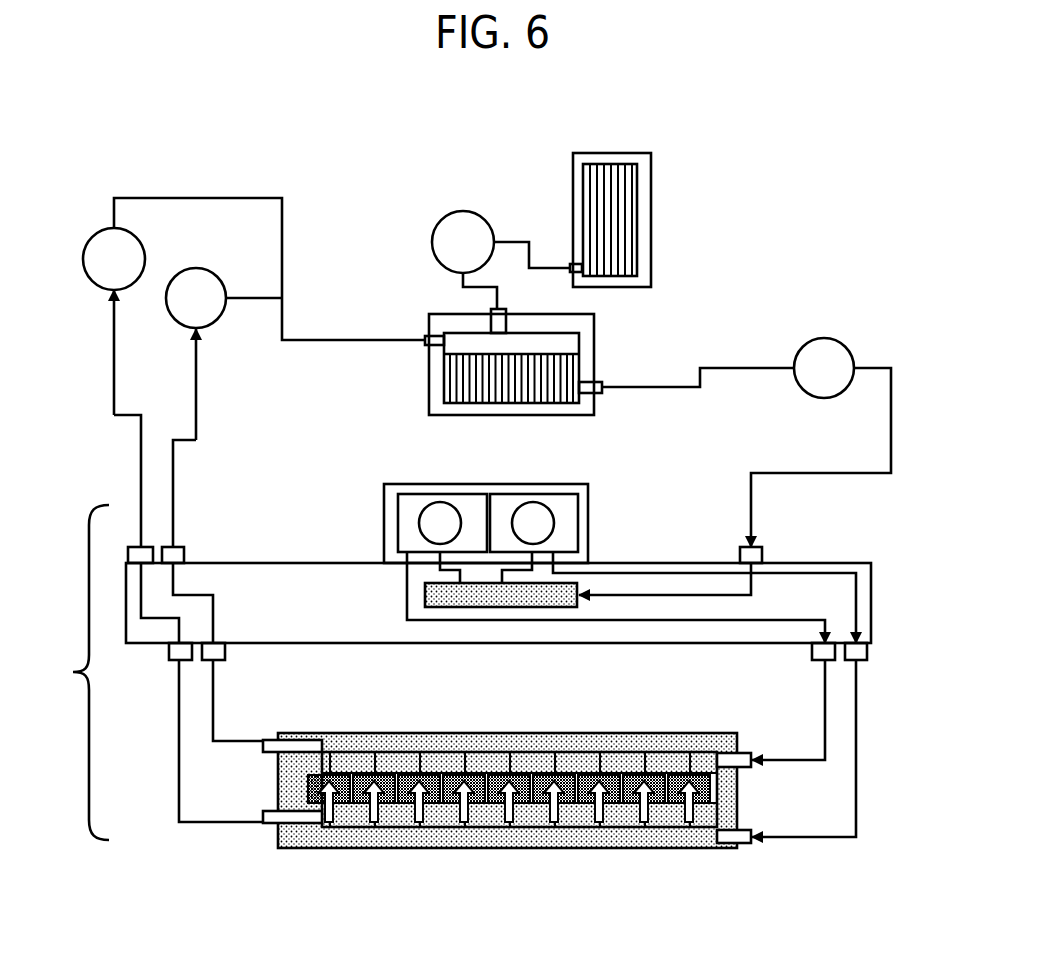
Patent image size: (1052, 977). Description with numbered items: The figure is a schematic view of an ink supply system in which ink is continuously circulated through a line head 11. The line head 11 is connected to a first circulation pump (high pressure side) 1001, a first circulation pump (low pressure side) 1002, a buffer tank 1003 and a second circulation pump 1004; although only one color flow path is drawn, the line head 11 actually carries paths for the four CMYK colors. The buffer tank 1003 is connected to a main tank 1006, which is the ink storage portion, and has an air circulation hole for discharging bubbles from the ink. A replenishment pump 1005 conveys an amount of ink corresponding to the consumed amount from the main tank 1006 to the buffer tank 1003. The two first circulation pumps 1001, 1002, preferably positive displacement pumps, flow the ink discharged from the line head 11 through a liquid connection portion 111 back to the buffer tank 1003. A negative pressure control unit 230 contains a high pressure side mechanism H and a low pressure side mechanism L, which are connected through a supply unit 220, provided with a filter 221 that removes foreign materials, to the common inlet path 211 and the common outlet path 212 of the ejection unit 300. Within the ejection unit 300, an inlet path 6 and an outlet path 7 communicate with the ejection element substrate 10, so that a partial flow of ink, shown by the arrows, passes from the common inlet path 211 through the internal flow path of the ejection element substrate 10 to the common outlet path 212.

The first circulation pump (high pressure side) 1001 is at (114, 228).
The first circulation pump (low pressure side) 1002 is at (222, 250).
The buffer tank 1003 is at (516, 415).
The second circulation pump 1004 is at (824, 338).
The replenishment pump 1005 is at (463, 211).
The main tank 1006 is at (651, 220).
The negative pressure control unit 230 is at (588, 520).
The filter 221 is at (425, 595).
The supply unit 220 is at (871, 600).
The liquid connection portion 111 is at (185, 553).
The line head 11 is at (76, 672).
The common outlet path 212 is at (400, 750).
The ejection element substrate 10 is at (520, 772).
The outlet path 7 is at (692, 770).
The common inlet path 211 is at (437, 830).
The ejection unit 300 is at (612, 850).
The inlet path 6 is at (690, 812).